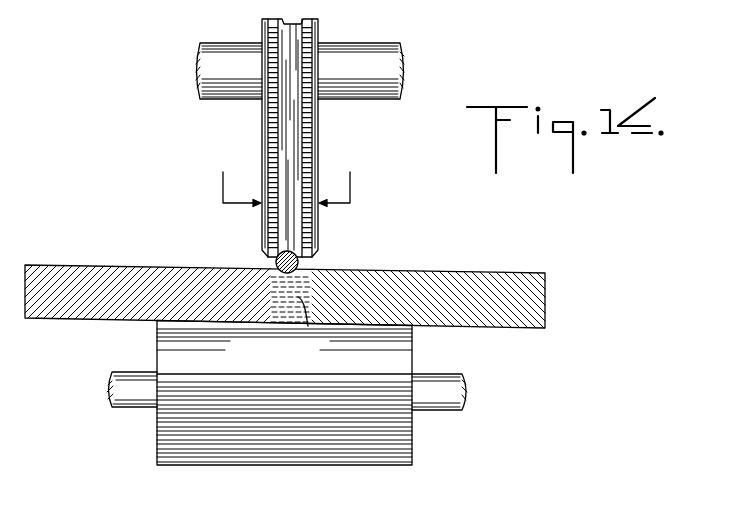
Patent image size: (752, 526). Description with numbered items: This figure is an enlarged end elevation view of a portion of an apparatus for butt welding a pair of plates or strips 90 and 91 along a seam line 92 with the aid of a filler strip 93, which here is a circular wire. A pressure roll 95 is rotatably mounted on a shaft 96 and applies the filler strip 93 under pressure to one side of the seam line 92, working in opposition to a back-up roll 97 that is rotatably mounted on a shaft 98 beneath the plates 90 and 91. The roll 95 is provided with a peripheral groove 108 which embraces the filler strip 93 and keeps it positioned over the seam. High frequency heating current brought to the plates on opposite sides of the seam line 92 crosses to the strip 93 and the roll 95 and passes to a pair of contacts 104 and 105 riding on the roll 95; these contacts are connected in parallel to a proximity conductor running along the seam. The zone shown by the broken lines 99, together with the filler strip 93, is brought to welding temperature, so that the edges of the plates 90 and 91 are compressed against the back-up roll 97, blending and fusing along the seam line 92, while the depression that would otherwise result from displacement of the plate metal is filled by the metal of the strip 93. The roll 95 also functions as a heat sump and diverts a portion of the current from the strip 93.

The plate 90 is at (89, 266).
The plate 91 is at (478, 273).
The seam line 92 is at (279, 323).
The filler strip 93 is at (299, 268).
The pressure roll 95 is at (286, 138).
The shaft 96 is at (358, 46).
The back-up roll 97 is at (284, 393).
The shaft 98 is at (127, 398).
The broken lines 99 is at (334, 348).
The contact 104 is at (322, 207).
The contact 105 is at (257, 204).
The peripheral groove 108 is at (237, 131).